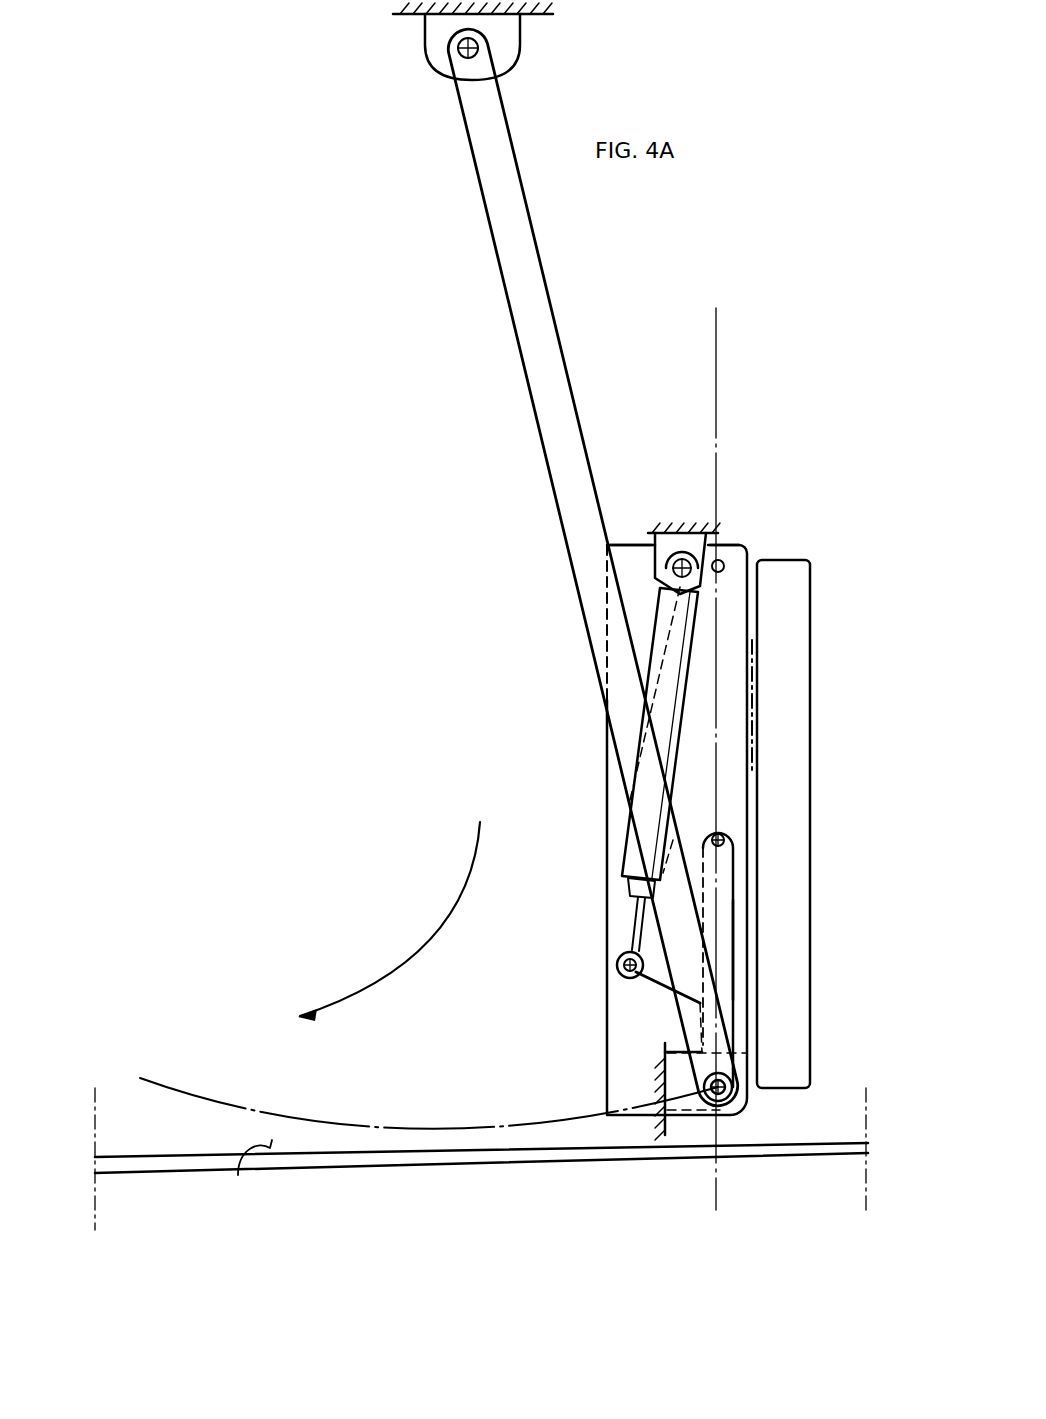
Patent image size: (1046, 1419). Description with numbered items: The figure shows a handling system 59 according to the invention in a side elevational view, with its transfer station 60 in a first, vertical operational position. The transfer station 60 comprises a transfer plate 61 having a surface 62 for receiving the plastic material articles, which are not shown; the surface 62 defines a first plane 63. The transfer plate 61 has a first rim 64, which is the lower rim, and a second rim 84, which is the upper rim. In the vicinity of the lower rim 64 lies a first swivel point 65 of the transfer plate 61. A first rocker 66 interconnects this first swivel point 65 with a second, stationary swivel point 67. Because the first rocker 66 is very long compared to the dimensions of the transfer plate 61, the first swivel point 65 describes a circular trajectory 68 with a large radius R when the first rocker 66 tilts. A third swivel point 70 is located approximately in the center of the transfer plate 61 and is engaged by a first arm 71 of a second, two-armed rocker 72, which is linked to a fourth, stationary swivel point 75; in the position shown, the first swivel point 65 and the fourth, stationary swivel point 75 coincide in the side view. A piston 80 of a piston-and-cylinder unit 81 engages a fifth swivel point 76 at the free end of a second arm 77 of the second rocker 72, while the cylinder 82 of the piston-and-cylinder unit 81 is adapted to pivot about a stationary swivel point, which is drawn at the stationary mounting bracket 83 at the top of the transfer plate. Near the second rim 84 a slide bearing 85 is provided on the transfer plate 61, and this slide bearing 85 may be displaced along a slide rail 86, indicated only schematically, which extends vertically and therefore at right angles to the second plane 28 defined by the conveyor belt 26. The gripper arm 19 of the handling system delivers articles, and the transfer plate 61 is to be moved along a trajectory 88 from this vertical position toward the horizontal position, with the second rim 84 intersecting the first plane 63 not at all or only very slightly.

The gripper arm 19 is at (780, 725).
The conveyor belt 26 is at (160, 1170).
The second plane 28 is at (238, 1176).
The handling system 59 is at (232, 812).
The transfer station 60 is at (415, 565).
The transfer plate 61 is at (612, 1010).
The surface 62 is at (752, 550).
The first plane 63 is at (752, 750).
The first rim 64 is at (622, 1122).
The first swivel point 65 is at (730, 1100).
The first rocker 66 is at (545, 369).
The second stationary swivel point 67 is at (445, 88).
The circular trajectory 68 is at (308, 1113).
The third swivel point 70 is at (733, 825).
The first arm 71 is at (723, 880).
The second rocker 72 is at (748, 950).
The fourth stationary swivel point 75 is at (775, 1148).
The fifth swivel point 76 is at (618, 968).
The second arm 77 is at (668, 985).
The piston 80 is at (628, 908).
The piston-and-cylinder unit 81 is at (618, 826).
The cylinder 82 is at (678, 645).
The bracket 83 is at (682, 538).
The second rim 84 is at (630, 540).
The slide bearing 85 is at (735, 540).
The slide rail 86 is at (716, 350).
The trajectory 88 is at (395, 978).
The radius R is at (441, 1116).